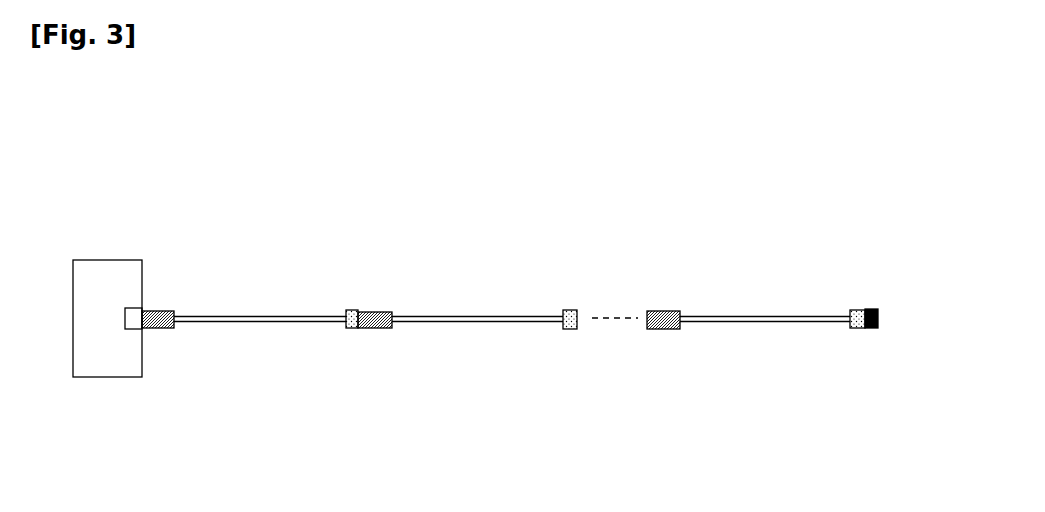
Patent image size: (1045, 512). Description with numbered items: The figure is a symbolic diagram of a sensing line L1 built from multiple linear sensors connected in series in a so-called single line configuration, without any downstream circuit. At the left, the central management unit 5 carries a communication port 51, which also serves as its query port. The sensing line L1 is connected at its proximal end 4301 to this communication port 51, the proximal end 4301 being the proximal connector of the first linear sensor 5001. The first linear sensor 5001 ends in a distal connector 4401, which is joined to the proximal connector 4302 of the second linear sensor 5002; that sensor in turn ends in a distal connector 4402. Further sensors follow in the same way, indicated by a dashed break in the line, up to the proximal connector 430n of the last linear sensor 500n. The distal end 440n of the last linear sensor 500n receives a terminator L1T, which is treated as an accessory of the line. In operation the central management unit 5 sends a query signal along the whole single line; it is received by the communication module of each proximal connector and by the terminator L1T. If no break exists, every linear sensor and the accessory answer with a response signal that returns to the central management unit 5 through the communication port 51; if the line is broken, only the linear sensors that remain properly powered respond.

The sensing line L1 is at (447, 153).
The central management unit 5 is at (108, 260).
The communication port 51 is at (122, 318).
The proximal end 4301 is at (158, 311).
The linear sensor 5001 is at (248, 291).
The distal connector 4401 is at (352, 310).
The proximal connector 4302 is at (385, 312).
The linear sensor 5002 is at (461, 296).
The distal connector 4402 is at (568, 310).
The proximal connector 430n is at (670, 311).
The linear sensor 500n is at (753, 291).
The distal end 440n is at (855, 310).
The terminator L1T is at (880, 318).